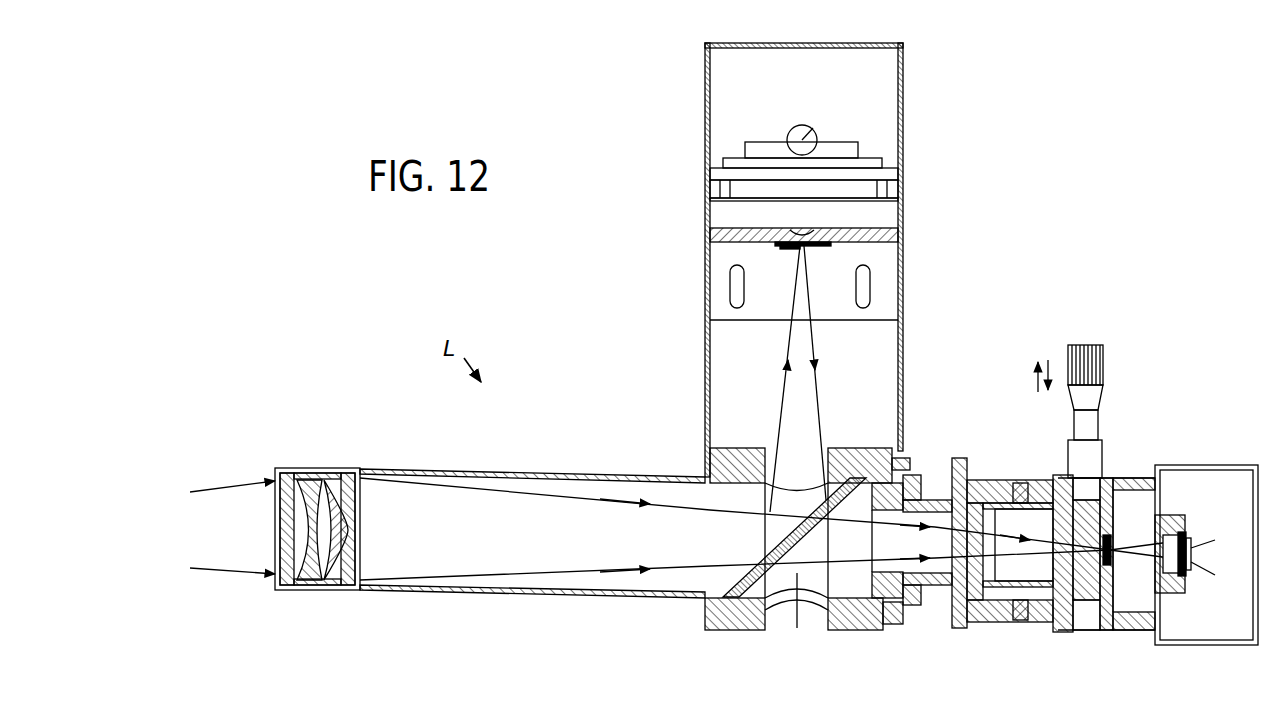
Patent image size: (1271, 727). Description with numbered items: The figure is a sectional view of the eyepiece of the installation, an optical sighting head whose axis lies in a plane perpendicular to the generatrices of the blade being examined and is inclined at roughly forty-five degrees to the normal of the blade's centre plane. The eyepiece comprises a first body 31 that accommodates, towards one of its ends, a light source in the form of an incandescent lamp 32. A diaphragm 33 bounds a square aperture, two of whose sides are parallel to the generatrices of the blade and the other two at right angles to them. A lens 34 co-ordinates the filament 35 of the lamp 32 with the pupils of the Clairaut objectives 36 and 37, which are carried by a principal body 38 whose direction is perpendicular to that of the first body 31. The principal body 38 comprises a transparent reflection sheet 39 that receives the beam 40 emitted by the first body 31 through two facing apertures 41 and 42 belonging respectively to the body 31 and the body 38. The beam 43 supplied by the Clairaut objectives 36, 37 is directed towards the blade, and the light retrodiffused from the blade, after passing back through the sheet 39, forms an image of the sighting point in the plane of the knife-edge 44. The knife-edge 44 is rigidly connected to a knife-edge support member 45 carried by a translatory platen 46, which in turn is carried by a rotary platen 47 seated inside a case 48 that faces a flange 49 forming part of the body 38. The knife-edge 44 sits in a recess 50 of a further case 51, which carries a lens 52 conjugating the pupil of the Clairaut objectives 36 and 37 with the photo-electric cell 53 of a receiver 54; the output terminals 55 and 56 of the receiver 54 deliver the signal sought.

The first body 31 is at (705, 378).
The incandescent lamp 32 is at (792, 132).
The diaphragm 33 is at (783, 247).
The lens 34 is at (803, 240).
The filament 35 is at (809, 130).
The Clairaut objective 36 is at (318, 498).
The Clairaut objective 37 is at (331, 498).
The principal body 38 is at (482, 470).
The transparent reflection sheet 39 is at (805, 602).
The beam 40 is at (805, 432).
The aperture 41 is at (770, 462).
The aperture 42 is at (790, 492).
The beam 43 is at (226, 502).
The knife-edge 44 is at (1108, 492).
The knife-edge support member 45 is at (1083, 634).
The translatory platen 46 is at (1062, 632).
The rotary platen 47 is at (988, 622).
The case 48 is at (993, 482).
The flange 49 is at (958, 460).
The recess 50 is at (1105, 622).
The case 51 is at (1130, 478).
The lens 52 is at (1112, 556).
The photo-electric cell 53 is at (1173, 586).
The receiver 54 is at (1180, 530).
The output terminal 55 is at (1192, 548).
The output terminal 56 is at (1192, 570).